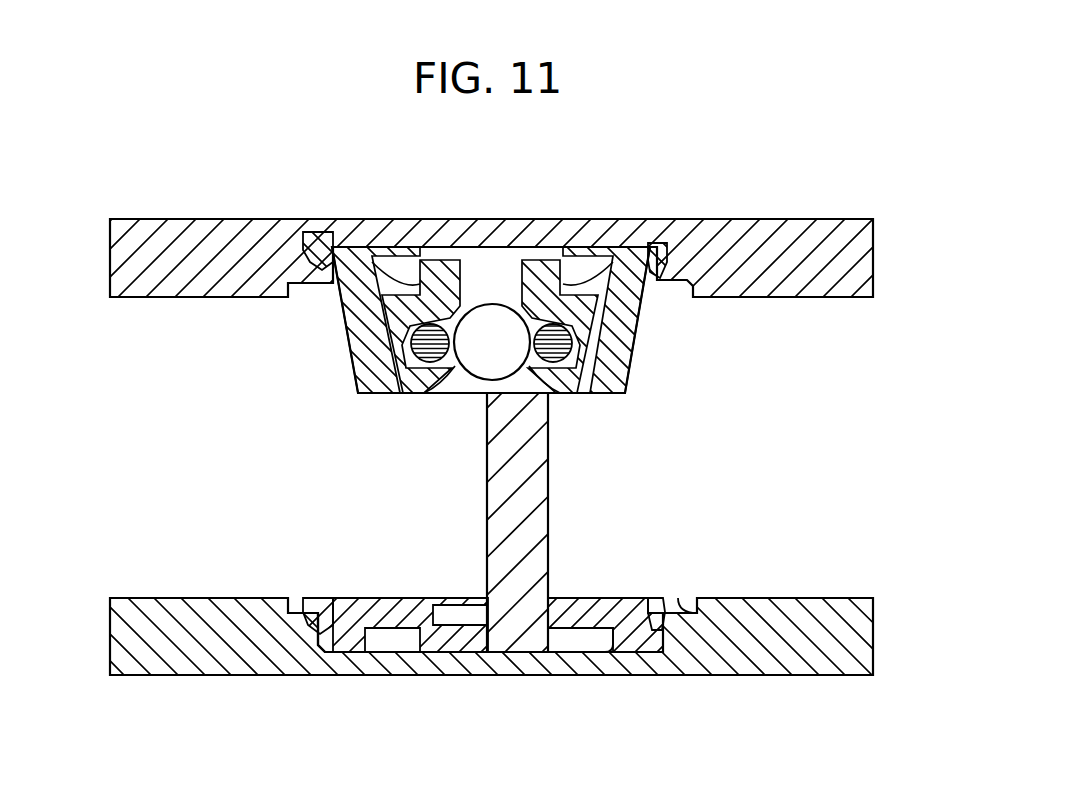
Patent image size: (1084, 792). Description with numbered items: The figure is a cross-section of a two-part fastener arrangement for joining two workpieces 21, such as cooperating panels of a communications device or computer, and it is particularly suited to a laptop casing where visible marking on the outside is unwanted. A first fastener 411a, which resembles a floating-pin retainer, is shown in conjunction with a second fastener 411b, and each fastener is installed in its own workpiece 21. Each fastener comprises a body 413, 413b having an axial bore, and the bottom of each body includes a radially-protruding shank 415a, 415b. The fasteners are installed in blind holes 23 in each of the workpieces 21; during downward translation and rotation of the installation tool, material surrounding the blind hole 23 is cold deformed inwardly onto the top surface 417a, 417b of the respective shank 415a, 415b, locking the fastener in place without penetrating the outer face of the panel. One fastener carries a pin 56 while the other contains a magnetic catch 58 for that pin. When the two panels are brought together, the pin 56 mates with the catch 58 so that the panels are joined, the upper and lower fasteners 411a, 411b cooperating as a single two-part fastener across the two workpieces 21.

The workpiece 21 is at (207, 219).
The blind hole 23 is at (505, 245).
The pin 56 is at (548, 480).
The magnetic catch 58 is at (465, 393).
The first fastener 411a is at (670, 372).
The second fastener 411b is at (378, 598).
The body 413 is at (346, 343).
The body of second fastener 413b is at (610, 652).
The shank of first fastener 415a is at (322, 248).
The shank of second fastener 415b is at (670, 646).
The top surface of shank 417a is at (657, 265).
The top surface of shank 417b is at (657, 628).